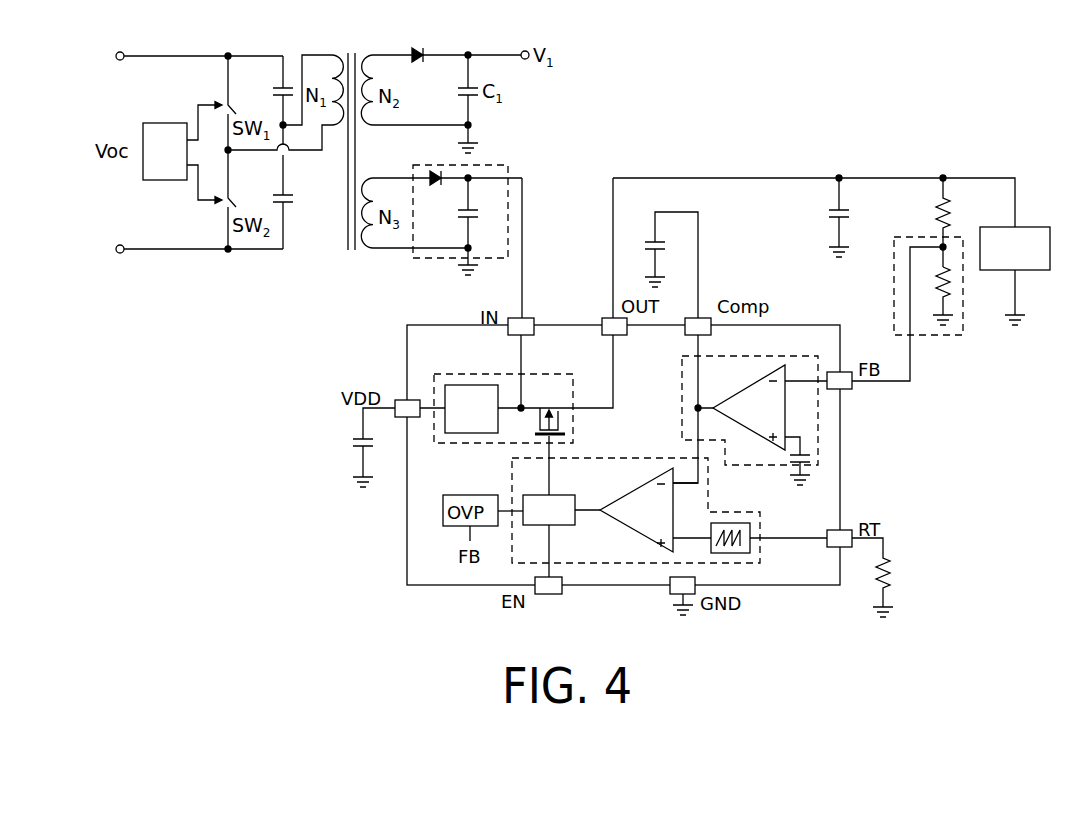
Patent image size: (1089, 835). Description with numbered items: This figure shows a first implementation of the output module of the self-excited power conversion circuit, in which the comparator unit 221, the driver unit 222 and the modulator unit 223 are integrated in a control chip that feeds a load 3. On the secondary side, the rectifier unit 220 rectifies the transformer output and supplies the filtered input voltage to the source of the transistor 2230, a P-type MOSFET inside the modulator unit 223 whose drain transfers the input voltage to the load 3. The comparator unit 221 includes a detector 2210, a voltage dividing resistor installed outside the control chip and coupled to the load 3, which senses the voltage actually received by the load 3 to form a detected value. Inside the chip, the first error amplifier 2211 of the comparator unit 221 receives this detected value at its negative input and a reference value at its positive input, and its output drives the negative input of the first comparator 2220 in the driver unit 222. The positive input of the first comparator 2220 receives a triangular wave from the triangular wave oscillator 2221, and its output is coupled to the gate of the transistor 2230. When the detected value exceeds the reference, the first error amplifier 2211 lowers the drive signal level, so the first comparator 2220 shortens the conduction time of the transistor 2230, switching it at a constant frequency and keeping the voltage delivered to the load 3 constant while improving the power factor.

The load 3 is at (1030, 227).
The rectifier unit 220 is at (508, 208).
The comparator unit 221 is at (840, 299).
The detector 2210 is at (945, 270).
The first error amplifier 2211 is at (787, 405).
The driver unit 222 is at (662, 554).
The first comparator 2220 is at (643, 545).
The triangular wave oscillator 2221 is at (750, 548).
The modulator unit 223 is at (440, 374).
The transistor 2230 is at (560, 411).